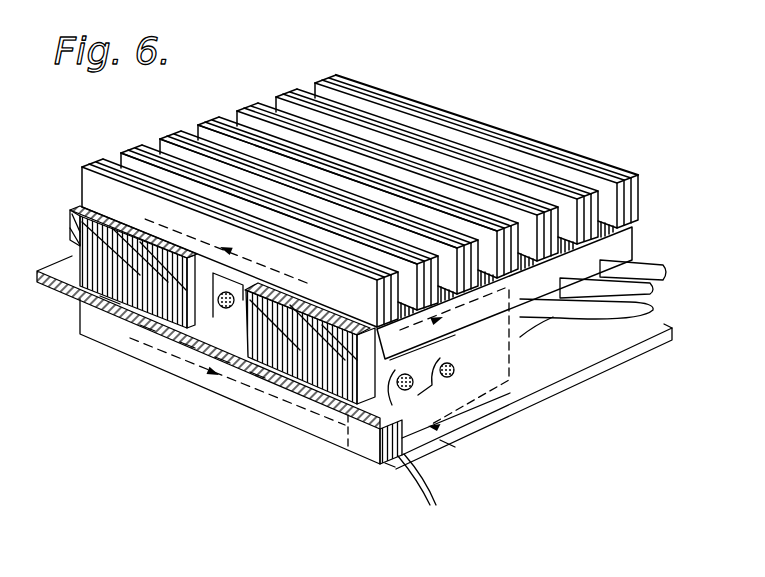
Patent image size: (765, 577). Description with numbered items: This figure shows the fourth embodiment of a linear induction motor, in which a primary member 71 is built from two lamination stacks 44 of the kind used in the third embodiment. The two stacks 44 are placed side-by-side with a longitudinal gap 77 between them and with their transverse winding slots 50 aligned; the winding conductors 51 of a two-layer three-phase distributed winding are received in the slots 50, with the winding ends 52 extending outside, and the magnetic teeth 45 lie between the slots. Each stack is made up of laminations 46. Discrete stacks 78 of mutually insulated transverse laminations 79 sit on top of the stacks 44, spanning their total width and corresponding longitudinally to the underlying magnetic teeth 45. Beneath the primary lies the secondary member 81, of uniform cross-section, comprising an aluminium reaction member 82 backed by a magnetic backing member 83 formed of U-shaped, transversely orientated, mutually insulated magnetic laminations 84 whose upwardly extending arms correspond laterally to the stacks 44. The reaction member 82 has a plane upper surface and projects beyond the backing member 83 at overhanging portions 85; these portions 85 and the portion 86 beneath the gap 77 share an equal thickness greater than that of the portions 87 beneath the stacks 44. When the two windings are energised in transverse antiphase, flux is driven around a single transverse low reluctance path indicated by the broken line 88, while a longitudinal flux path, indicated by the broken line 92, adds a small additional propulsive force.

The primary member 71 is at (76, 188).
The discrete stacks of transverse laminations 78 is at (204, 116).
The transverse laminations 79 is at (130, 151).
The broken line 88 is at (307, 286).
The broken line 92 is at (510, 378).
The overhanging portions 85 is at (68, 268).
The lamination stack 44 is at (92, 302).
The magnetic teeth 45 is at (455, 412).
The laminations 46 is at (124, 304).
The winding conductors 51 is at (222, 304).
The winding ends 52 is at (524, 337).
The portions beneath the stacks 87 is at (112, 392).
The magnetic backing member 83 is at (147, 382).
The portion beneath the slot 86 is at (187, 383).
The winding slots 50 is at (222, 383).
The longitudinal gap 77 is at (258, 385).
The secondary member 81 is at (396, 471).
The magnetic laminations 84 is at (425, 494).
The aluminium reaction member 82 is at (450, 447).